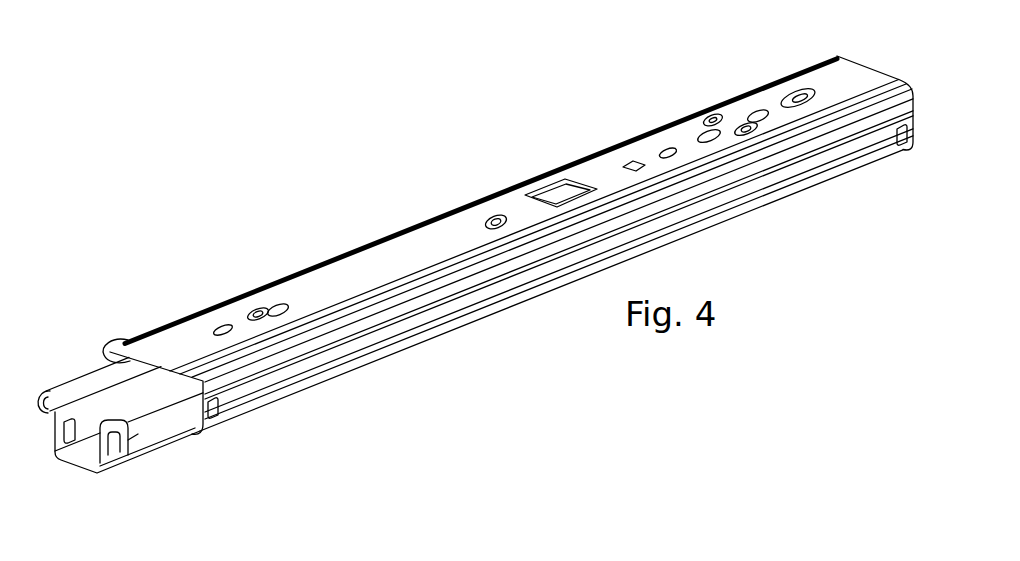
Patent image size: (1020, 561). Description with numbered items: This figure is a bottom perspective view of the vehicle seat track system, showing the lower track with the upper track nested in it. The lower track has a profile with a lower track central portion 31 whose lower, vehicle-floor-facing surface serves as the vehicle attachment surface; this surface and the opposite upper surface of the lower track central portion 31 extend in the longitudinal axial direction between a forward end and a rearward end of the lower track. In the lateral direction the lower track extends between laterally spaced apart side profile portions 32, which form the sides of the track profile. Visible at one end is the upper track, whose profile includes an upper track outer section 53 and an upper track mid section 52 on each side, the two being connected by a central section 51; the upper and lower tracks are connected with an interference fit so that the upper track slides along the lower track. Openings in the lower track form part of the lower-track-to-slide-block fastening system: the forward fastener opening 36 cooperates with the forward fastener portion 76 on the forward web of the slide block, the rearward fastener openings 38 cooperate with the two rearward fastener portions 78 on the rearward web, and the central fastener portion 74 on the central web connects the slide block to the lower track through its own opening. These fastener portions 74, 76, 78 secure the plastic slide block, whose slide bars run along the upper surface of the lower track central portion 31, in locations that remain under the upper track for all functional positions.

The lower track central portion 31 is at (338, 272).
The side profile portions 32 is at (273, 383).
The forward fastener opening 36 is at (277, 310).
The rearward fastener openings 38 is at (730, 113).
The central section 51 is at (83, 460).
The upper track mid section 52 is at (87, 418).
The upper track outer section 53 is at (136, 432).
The central fastener portion 74 is at (497, 217).
The forward fastener portion 76 is at (257, 313).
The rearward fastener portions 78 is at (715, 117).